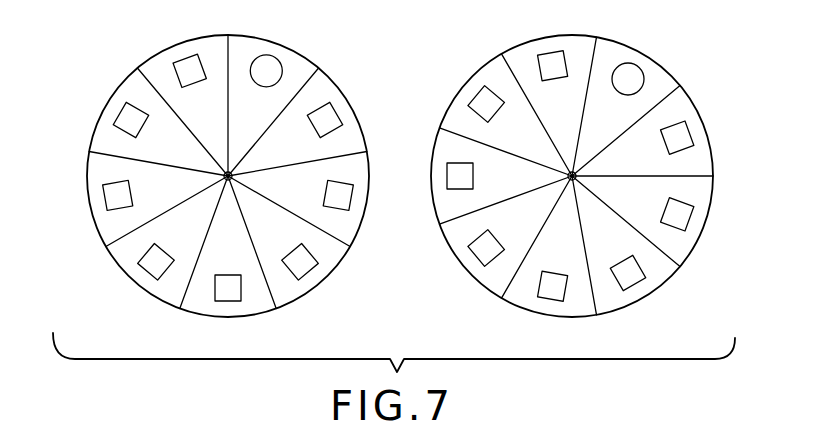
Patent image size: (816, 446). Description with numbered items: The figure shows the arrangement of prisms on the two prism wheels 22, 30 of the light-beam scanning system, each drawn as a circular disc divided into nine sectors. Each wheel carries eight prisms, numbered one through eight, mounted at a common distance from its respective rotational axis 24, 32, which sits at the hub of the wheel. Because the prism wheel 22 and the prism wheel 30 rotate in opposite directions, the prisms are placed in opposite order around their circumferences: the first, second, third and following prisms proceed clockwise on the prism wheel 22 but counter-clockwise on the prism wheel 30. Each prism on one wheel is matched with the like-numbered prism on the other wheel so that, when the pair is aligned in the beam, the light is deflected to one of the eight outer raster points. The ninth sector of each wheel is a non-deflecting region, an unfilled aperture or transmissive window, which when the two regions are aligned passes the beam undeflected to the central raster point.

The prism wheel 22 is at (223, 183).
The rotational axis 24 is at (232, 172).
The prism wheel 30 is at (569, 181).
The rotational axis 32 is at (576, 173).